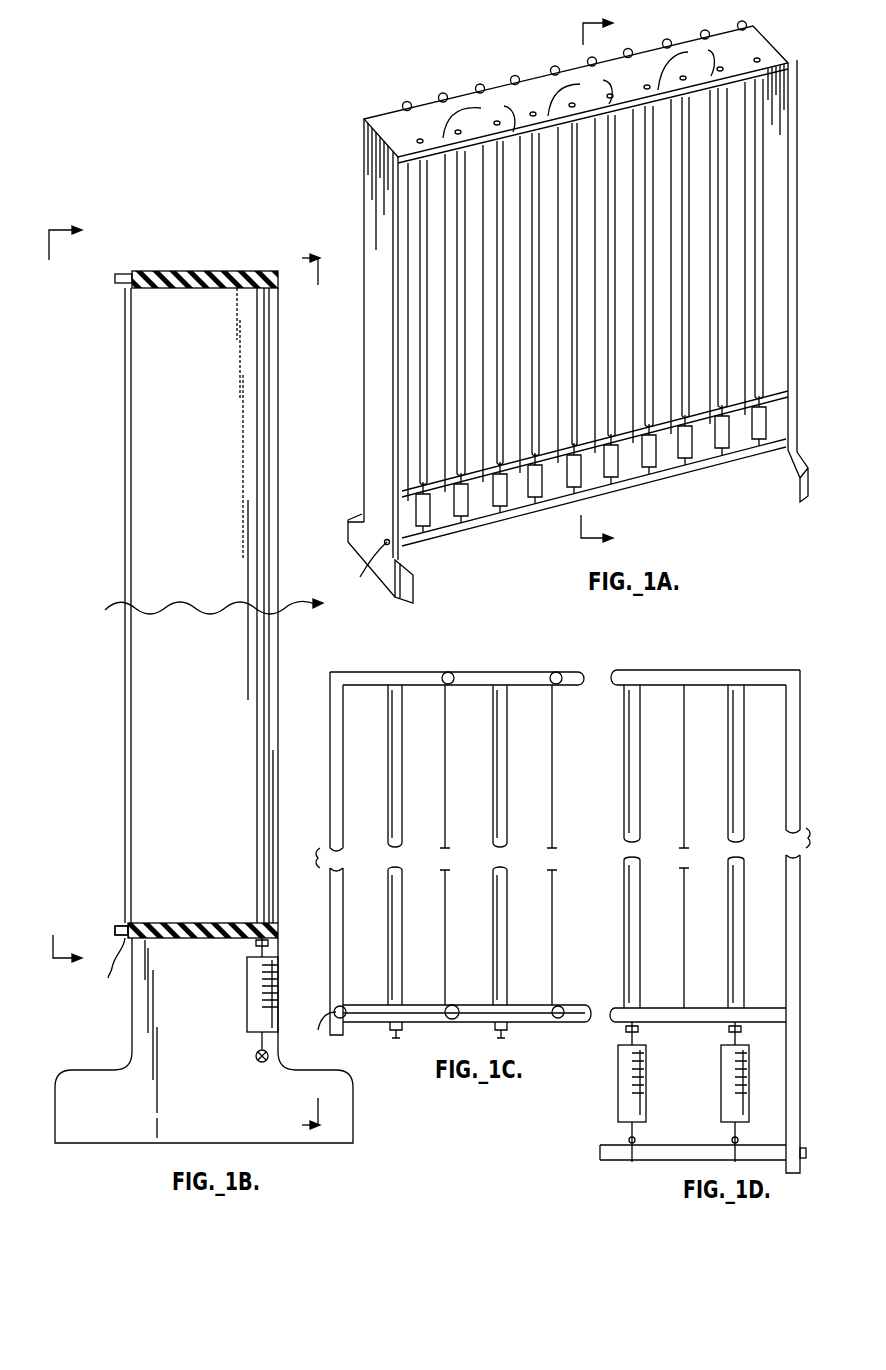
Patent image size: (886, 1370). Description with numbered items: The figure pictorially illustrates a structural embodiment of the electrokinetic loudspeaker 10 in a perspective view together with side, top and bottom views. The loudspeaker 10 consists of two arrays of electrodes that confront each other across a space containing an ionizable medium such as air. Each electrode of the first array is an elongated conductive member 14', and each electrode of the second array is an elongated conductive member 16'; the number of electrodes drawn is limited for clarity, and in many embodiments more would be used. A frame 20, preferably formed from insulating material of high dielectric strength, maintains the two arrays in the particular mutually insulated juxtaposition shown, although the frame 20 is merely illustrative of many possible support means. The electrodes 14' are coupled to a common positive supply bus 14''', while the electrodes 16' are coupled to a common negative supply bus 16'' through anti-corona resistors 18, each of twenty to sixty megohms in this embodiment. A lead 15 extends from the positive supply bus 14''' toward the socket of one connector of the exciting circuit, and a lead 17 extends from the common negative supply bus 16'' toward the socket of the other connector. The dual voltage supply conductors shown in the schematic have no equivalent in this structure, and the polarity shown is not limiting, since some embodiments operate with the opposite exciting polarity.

In FIG. 1A, the electrokinetic loudspeaker 10 is at (571, 307).
In FIG. 1B, the electrokinetic loudspeaker 10 is at (201, 689).
In FIG. 1C, the electrokinetic loudspeaker 10 is at (446, 842).
In FIG. 1D, the electrokinetic loudspeaker 10 is at (708, 910).
In FIG. 1A, the elongated conductive member 14' is at (543, 261).
In FIG. 1B, the elongated conductive member 14' is at (107, 605).
In FIG. 1C, the elongated conductive member 14' is at (487, 838).
In FIG. 1D, the elongated conductive member 14' is at (698, 846).
In FIG. 1B, the common positive supply bus 14''' is at (103, 908).
In FIG. 1C, the common positive supply bus 14''' is at (496, 994).
In FIG. 1B, the lead 15 is at (112, 972).
In FIG. 1C, the lead 15 is at (330, 1012).
In FIG. 1A, the elongated conductive member 16' is at (590, 271).
In FIG. 1B, the elongated conductive member 16' is at (274, 605).
In FIG. 1C, the elongated conductive member 16' is at (431, 861).
In FIG. 1D, the elongated conductive member 16' is at (699, 846).
In FIG. 1A, the common negative supply bus 16'' is at (594, 492).
In FIG. 1B, the common negative supply bus 16'' is at (247, 1058).
In FIG. 1D, the common negative supply bus 16'' is at (703, 1140).
In FIG. 1A, the lead 17 is at (365, 556).
In FIG. 1A, the anti-corona resistor 18 is at (488, 496).
In FIG. 1B, the anti-corona resistor 18 is at (247, 1010).
In FIG. 1D, the anti-corona resistor 18 is at (721, 1072).
In FIG. 1A, the frame 20 is at (579, 313).
In FIG. 1B, the frame 20 is at (212, 272).
In FIG. 1C, the frame 20 is at (338, 856).
In FIG. 1D, the frame 20 is at (796, 1050).